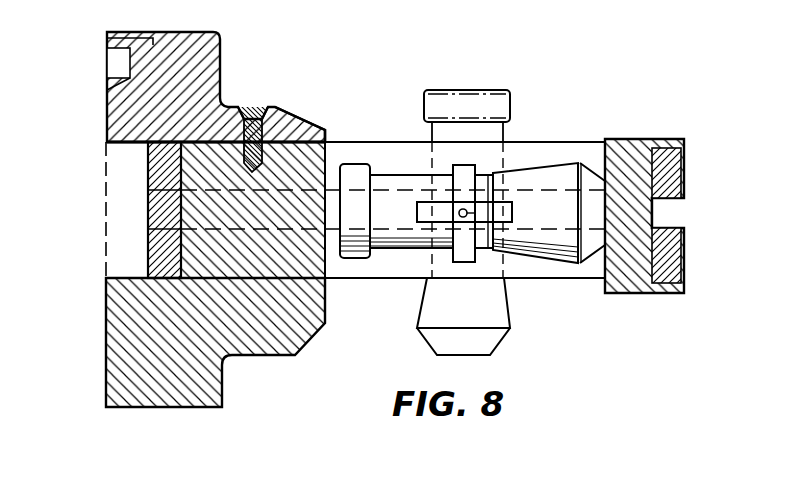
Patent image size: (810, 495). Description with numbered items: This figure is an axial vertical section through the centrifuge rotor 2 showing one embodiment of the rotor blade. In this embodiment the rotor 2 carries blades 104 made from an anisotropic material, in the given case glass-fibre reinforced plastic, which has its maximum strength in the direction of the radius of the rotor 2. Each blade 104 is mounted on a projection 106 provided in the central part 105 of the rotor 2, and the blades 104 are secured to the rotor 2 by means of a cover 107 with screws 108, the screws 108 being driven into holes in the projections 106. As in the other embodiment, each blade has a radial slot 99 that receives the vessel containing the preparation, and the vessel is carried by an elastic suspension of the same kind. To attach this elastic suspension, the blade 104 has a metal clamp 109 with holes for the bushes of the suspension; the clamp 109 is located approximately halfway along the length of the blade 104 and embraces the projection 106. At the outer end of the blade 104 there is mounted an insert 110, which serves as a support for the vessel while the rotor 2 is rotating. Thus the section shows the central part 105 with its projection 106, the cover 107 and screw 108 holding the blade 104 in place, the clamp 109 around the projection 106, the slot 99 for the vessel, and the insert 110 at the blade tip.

The rotor 2 is at (297, 109).
The radial slot 99 is at (555, 272).
The blade 104 is at (698, 200).
The central part 105 is at (202, 368).
The projection 106 is at (188, 253).
The cover 107 is at (216, 44).
The screw 108 is at (265, 105).
The metal clamp 109 is at (157, 203).
The insert 110 is at (630, 148).